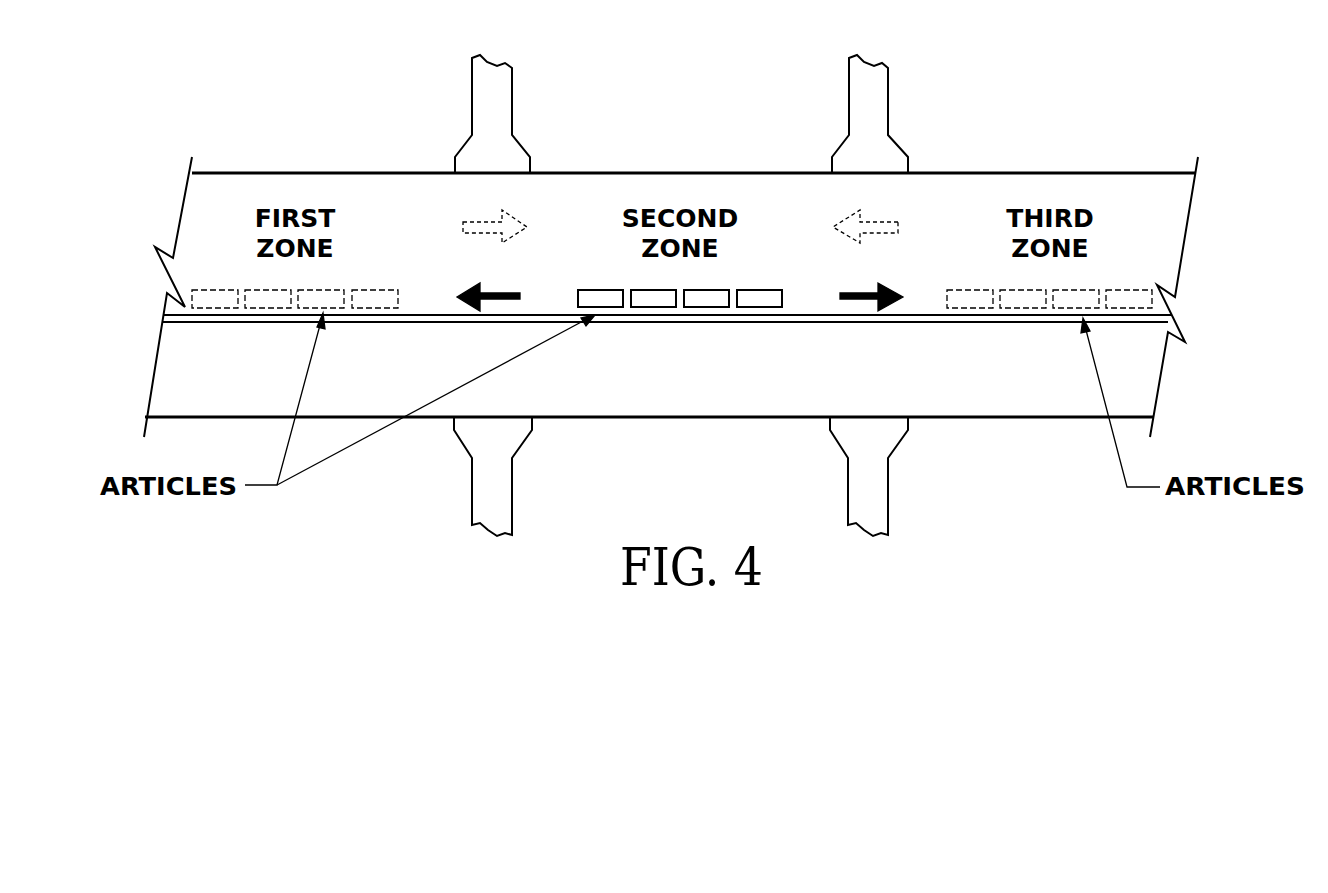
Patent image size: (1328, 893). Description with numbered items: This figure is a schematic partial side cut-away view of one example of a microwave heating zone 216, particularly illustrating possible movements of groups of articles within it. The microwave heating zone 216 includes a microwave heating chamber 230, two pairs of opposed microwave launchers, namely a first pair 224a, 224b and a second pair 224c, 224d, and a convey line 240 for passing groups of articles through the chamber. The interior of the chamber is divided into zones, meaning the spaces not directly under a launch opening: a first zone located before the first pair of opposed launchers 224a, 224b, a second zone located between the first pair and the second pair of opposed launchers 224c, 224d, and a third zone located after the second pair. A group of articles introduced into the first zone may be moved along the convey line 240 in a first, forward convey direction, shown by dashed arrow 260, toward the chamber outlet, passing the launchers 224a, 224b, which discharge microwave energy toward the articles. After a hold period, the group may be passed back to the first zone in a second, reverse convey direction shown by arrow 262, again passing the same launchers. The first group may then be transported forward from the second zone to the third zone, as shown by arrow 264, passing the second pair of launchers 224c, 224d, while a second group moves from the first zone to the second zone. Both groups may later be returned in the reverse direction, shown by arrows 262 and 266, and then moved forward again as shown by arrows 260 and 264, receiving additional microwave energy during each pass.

The microwave heating zone 216 is at (1150, 115).
The microwave launcher 224a is at (515, 148).
The microwave launcher 224b is at (468, 440).
The microwave launcher 224c is at (890, 148).
The microwave launcher 224d is at (847, 438).
The microwave heating chamber 230 is at (1027, 419).
The convey line 240 is at (1137, 322).
The first convey direction arrow 260 is at (485, 222).
The second convey direction arrow 262 is at (497, 291).
The forward direction arrow 264 is at (865, 291).
The reverse direction arrow 266 is at (877, 222).